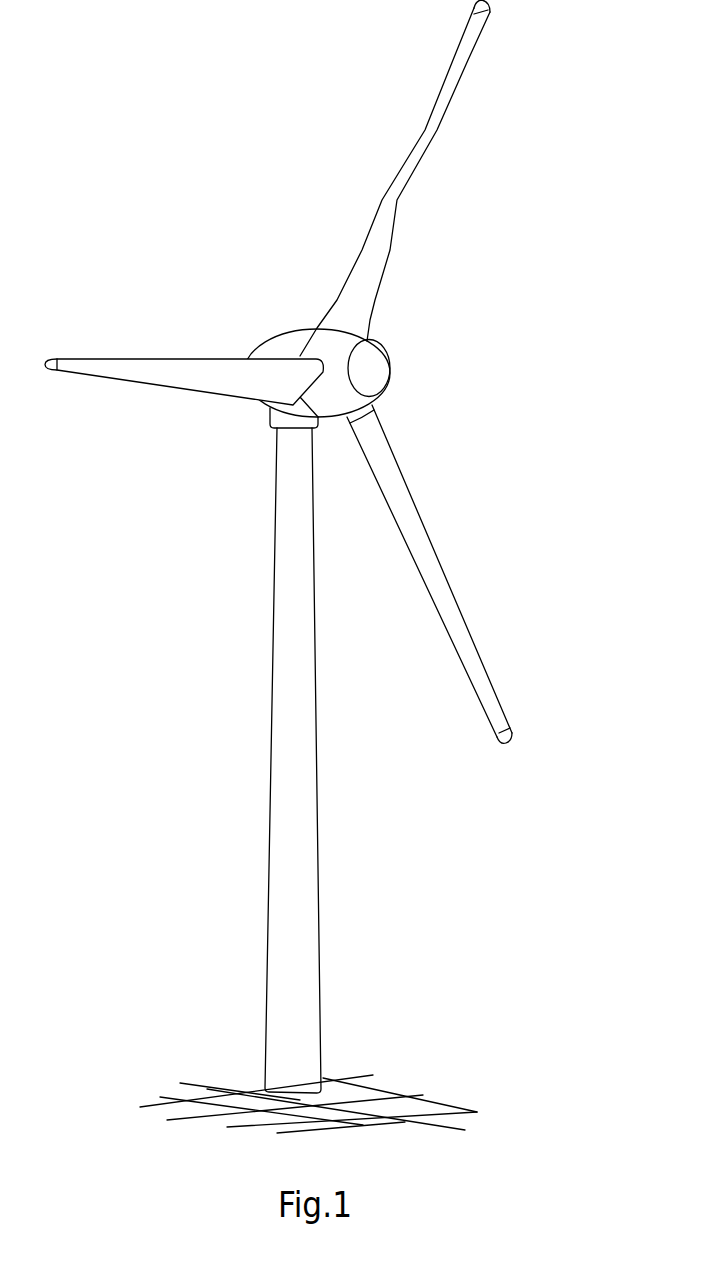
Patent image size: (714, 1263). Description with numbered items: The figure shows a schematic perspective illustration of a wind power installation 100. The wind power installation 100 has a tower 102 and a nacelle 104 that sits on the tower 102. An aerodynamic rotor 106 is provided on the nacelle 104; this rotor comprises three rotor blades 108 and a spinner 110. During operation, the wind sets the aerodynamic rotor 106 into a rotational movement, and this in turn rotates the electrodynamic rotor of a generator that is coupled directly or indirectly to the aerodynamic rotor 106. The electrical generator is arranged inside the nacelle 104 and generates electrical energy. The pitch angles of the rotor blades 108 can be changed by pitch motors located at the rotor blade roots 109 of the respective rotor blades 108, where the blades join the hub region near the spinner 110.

The wind power installation 100 is at (230, 499).
The tower 102 is at (305, 837).
The nacelle 104 is at (289, 350).
The aerodynamic rotor 106 is at (462, 288).
The rotor blade 108 is at (130, 358).
The rotor blade root 109 is at (378, 402).
The spinner 110 is at (376, 369).